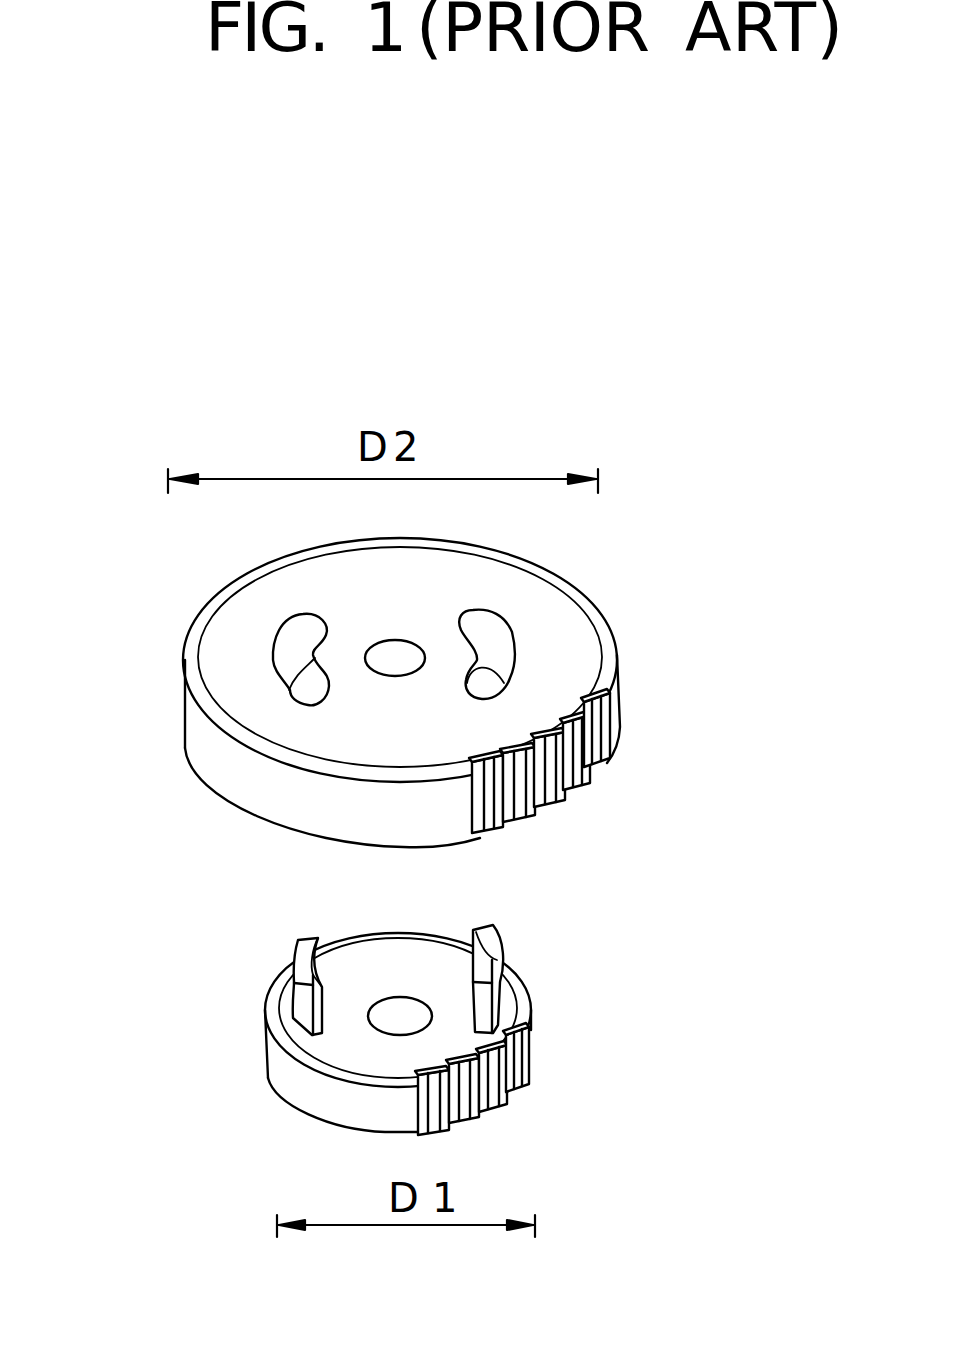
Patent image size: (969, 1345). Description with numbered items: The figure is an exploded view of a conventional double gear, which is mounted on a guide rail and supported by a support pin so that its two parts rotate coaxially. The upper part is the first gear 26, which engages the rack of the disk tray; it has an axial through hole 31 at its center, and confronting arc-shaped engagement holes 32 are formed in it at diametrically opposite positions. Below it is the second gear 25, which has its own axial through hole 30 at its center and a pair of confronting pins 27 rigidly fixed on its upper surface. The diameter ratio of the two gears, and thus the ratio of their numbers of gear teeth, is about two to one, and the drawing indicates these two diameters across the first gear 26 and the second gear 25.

The second gear 25 is at (316, 1092).
The first gear 26 is at (572, 672).
The pins 27 is at (300, 966).
The axial through hole 30 is at (377, 1012).
The axial through hole 31 is at (379, 660).
The arc-shaped engagement holes 32 is at (288, 684).